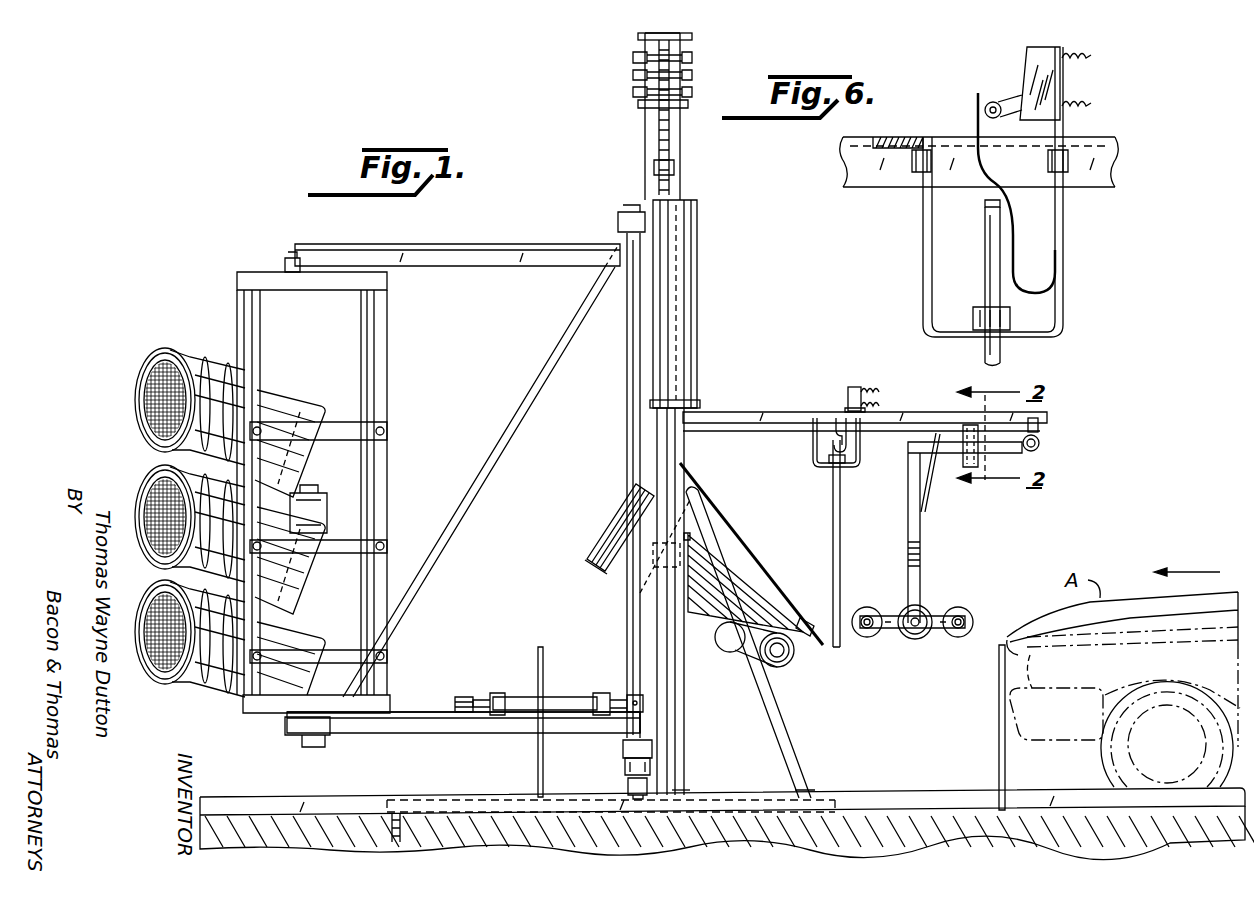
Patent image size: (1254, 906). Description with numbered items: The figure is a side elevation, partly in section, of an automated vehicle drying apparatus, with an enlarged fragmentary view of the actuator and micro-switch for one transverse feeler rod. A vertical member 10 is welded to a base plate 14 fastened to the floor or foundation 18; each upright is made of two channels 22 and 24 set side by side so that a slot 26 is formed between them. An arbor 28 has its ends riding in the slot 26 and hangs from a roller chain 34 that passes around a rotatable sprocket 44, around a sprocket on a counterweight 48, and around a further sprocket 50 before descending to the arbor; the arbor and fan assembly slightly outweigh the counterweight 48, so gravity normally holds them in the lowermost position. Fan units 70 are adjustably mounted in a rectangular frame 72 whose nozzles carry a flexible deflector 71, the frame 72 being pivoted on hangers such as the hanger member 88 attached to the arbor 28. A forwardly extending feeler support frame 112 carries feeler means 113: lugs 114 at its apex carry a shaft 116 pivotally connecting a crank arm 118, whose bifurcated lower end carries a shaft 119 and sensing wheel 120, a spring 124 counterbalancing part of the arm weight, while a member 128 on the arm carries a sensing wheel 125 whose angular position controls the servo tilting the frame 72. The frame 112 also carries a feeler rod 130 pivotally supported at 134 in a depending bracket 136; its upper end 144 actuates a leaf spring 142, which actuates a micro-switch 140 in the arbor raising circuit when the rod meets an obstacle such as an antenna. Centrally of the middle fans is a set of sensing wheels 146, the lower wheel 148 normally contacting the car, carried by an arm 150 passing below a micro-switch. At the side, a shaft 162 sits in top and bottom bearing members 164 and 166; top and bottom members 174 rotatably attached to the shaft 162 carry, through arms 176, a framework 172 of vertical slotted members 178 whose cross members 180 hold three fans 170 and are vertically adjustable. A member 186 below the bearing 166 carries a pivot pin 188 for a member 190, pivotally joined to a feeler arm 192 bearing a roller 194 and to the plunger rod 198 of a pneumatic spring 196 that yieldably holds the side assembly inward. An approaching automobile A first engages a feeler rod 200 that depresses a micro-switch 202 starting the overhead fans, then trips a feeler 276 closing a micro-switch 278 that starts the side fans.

In FIG. 1, the vertical member 10 is at (688, 723).
In FIG. 1, the base plate 14 is at (726, 800).
In FIG. 1, the floor or foundation 18 is at (892, 797).
In FIG. 1, the channel 22 is at (668, 670).
In FIG. 1, the channel 24 is at (685, 690).
In FIG. 1, the slot 26 is at (686, 747).
In FIG. 1, the arbor 28 is at (700, 390).
In FIG. 1, the roller chain 34 is at (673, 130).
In FIG. 1, the rotatable sprocket 44 is at (692, 38).
In FIG. 1, the counterweight 48 is at (698, 297).
In FIG. 1, the sprocket 50 is at (693, 74).
In FIG. 1, the fan unit 70 is at (694, 558).
In FIG. 1, the flexible deflector 71 is at (810, 612).
In FIG. 1, the rectangular frame 72 is at (696, 500).
In FIG. 1, the hanger member 88 is at (626, 442).
In FIG. 1, the feeler support frame 112 is at (755, 413).
In FIG. 6, the feeler support frame 112 is at (860, 182).
In FIG. 1, the feeler means 113 is at (910, 642).
In FIG. 1, the lug 114 is at (1040, 428).
In FIG. 1, the shaft 116 is at (1041, 446).
In FIG. 1, the crank arm 118 is at (922, 536).
In FIG. 1, the shaft 119 is at (905, 608).
In FIG. 1, the sensing wheel 120 is at (932, 607).
In FIG. 1, the spring 124 is at (929, 485).
In FIG. 1, the sensing wheel 125 is at (975, 615).
In FIG. 1, the member 128 is at (926, 640).
In FIG. 1, the feeler rod 130 is at (832, 536).
In FIG. 6, the feeler rod 130 is at (984, 277).
In FIG. 1, the pivotal support 134 is at (848, 463).
In FIG. 6, the pivotal support 134 is at (972, 310).
In FIG. 1, the depending bracket 136 is at (812, 446).
In FIG. 6, the depending bracket 136 is at (922, 255).
In FIG. 1, the micro-switch 140 is at (852, 386).
In FIG. 6, the micro-switch 140 is at (1062, 87).
In FIG. 1, the leaf spring 142 is at (856, 440).
In FIG. 6, the leaf spring 142 is at (998, 178).
In FIG. 1, the upper end of feeler rod 144 is at (832, 432).
In FIG. 6, the upper end of feeler rod 144 is at (984, 200).
In FIG. 1, the set of sensing wheels 146 is at (789, 664).
In FIG. 1, the lower wheel 148 is at (794, 657).
In FIG. 1, the arm 150 is at (747, 629).
In FIG. 1, the shaft 162 is at (622, 322).
In FIG. 1, the top bearing member 164 is at (617, 221).
In FIG. 1, the bottom bearing member 166 is at (623, 762).
In FIG. 1, the fan 170 is at (152, 372).
In FIG. 1, the framework 172 is at (389, 468).
In FIG. 1, the top and bottom members 174 is at (440, 246).
In FIG. 1, the top and bottom arms 176 is at (285, 722).
In FIG. 1, the vertical slotted member 178 is at (256, 358).
In FIG. 1, the cross member 180 is at (336, 440).
In FIG. 1, the member 186 is at (627, 783).
In FIG. 1, the pivot pin 188 is at (622, 745).
In FIG. 1, the member 190 is at (408, 724).
In FIG. 1, the feeler arm 192 is at (280, 440).
In FIG. 1, the roller 194 is at (328, 505).
In FIG. 1, the pneumatic spring 196 is at (570, 697).
In FIG. 1, the plunger rod 198 is at (487, 697).
In FIG. 1, the feeler rod 200 is at (998, 766).
In FIG. 1, the micro-switch 202 is at (727, 833).
In FIG. 1, the feeler 276 is at (545, 660).
In FIG. 1, the micro-switch 278 is at (572, 826).